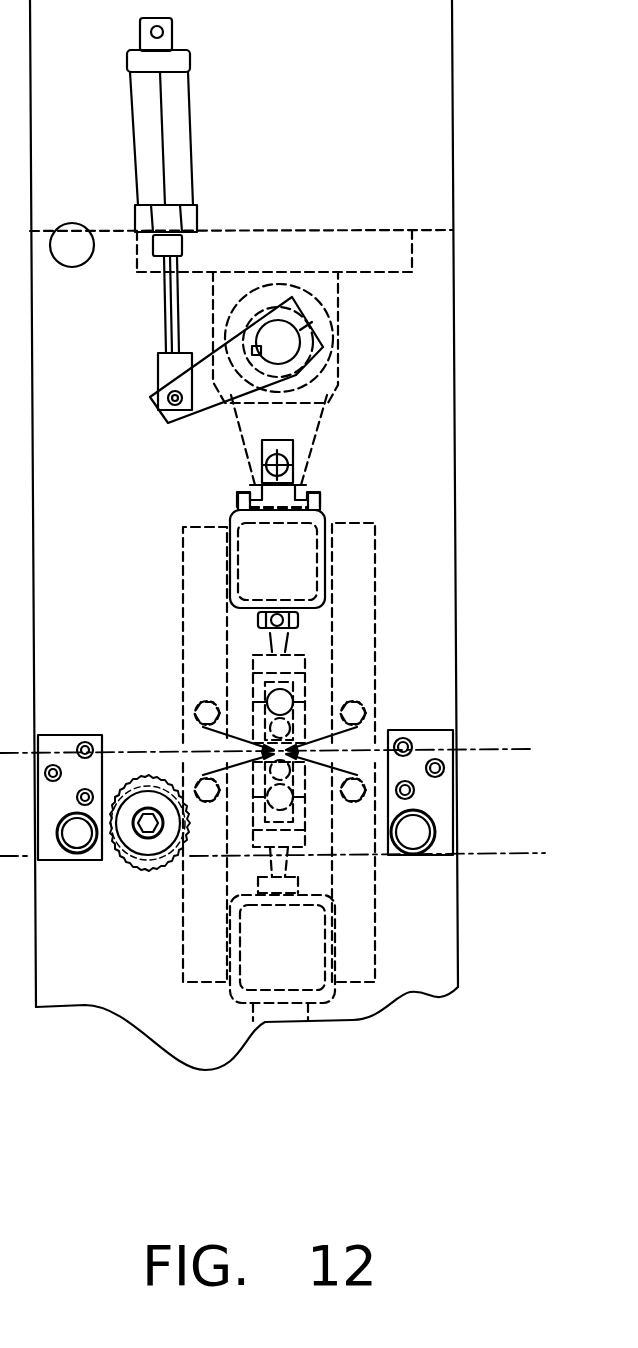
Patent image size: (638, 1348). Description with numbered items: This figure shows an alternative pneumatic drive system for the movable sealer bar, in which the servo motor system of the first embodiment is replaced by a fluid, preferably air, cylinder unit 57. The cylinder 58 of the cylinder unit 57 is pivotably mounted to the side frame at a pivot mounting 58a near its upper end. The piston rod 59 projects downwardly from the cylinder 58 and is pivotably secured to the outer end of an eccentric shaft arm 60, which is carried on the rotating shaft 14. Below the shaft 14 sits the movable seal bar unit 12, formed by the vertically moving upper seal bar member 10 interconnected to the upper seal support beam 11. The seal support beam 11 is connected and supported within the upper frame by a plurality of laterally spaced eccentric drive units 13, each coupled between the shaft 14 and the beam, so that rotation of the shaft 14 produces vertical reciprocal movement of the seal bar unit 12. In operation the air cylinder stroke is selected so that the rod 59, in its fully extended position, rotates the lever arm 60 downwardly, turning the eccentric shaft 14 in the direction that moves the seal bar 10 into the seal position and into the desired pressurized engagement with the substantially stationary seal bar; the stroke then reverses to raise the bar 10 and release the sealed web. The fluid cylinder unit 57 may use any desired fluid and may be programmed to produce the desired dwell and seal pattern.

The upper seal bar member 10 is at (250, 697).
The upper seal support beam 11 is at (235, 563).
The movable seal bar unit 12 is at (222, 640).
The eccentric drive unit 13 is at (303, 428).
The rotating shaft 14 is at (297, 372).
The cylinder unit 57 is at (200, 254).
The cylinder 58 is at (178, 138).
The pivot mounting 58a is at (164, 29).
The piston rod 59 is at (167, 315).
The eccentric shaft arm 60 is at (207, 400).